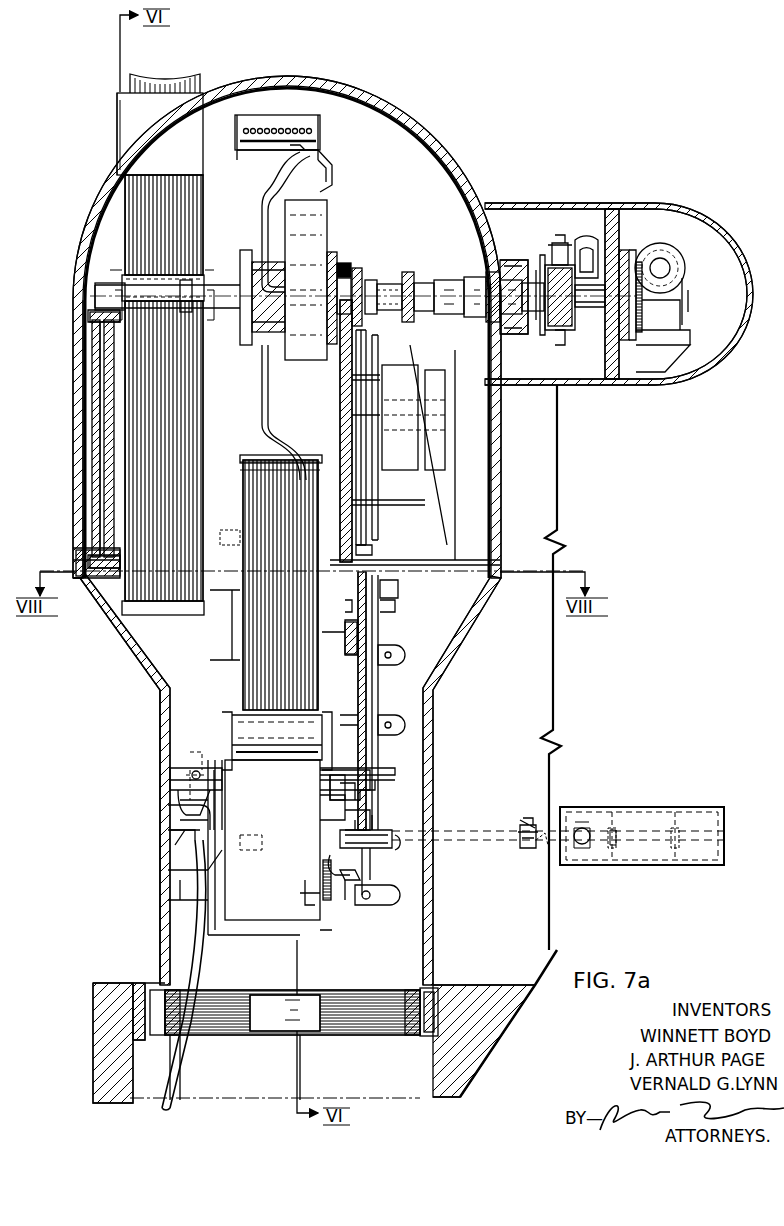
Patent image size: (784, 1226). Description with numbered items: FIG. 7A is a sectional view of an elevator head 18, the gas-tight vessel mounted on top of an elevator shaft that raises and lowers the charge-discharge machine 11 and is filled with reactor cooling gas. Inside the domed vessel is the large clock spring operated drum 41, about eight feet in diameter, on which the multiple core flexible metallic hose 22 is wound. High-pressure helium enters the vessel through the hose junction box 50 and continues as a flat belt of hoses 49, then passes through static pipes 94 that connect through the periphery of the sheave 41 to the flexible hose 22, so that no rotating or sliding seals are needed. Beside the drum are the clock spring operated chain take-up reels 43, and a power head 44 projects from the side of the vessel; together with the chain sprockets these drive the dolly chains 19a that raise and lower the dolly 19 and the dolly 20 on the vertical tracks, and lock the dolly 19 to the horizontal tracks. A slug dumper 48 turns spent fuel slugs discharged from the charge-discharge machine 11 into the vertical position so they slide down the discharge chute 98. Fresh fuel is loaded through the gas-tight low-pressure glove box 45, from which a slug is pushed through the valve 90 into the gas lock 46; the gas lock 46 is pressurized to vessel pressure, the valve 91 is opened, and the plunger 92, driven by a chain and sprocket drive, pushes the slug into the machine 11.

The charge-discharge machine 11 is at (258, 879).
The elevator head 18 is at (464, 163).
The dolly 19 is at (372, 830).
The chain 19a is at (372, 754).
The dolly 20 is at (350, 632).
The multiple core flexible metallic hose 22 is at (275, 124).
The clock spring operated drum 41 is at (324, 146).
The chain take-up reel 43 is at (362, 282).
The power head 44 is at (643, 205).
The glove box 45 is at (614, 828).
The gas lock 46 is at (545, 848).
The slug dumper 48 is at (184, 768).
The multiple core gas inlet hose 49 is at (138, 225).
The hose junction box 50 is at (128, 131).
The valve 90 is at (580, 818).
The valve 91 is at (527, 824).
The plunger 92 is at (660, 830).
The static pipe 94 is at (266, 196).
The discharge chute 98 is at (210, 970).